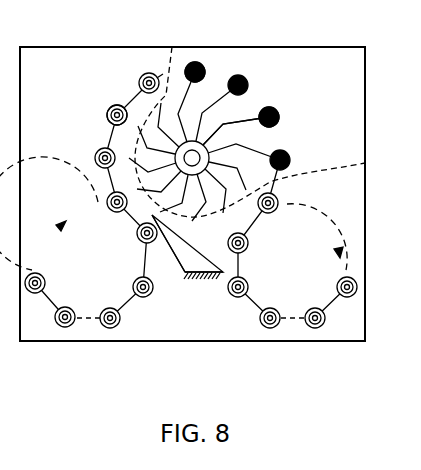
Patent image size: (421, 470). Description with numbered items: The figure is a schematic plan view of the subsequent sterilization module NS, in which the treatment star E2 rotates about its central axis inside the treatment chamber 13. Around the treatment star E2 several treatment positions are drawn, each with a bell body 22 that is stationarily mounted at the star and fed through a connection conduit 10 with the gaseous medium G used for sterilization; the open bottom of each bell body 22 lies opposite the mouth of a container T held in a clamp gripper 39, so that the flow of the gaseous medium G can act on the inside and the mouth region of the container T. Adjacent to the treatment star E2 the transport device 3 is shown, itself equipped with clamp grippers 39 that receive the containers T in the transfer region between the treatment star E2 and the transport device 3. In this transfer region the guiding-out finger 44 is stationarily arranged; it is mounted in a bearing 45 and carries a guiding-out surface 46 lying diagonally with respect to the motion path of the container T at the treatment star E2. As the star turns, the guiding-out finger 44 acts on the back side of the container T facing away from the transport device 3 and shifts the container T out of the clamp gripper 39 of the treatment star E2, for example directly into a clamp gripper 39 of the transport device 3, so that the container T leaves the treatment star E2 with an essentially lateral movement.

The gaseous medium G is at (218, 61).
The subsequent sterilization module NS is at (261, 58).
The treatment star E2 is at (253, 101).
The bell body 22 is at (283, 108).
The connection conduit 10 is at (275, 136).
The treatment chamber 13 is at (323, 172).
The transport device 3 is at (326, 215).
The container T is at (107, 114).
The clamp gripper 39 is at (95, 158).
The guiding-out finger 44 is at (183, 274).
The bearing 45 is at (214, 278).
The guiding-out surface 46 is at (175, 264).